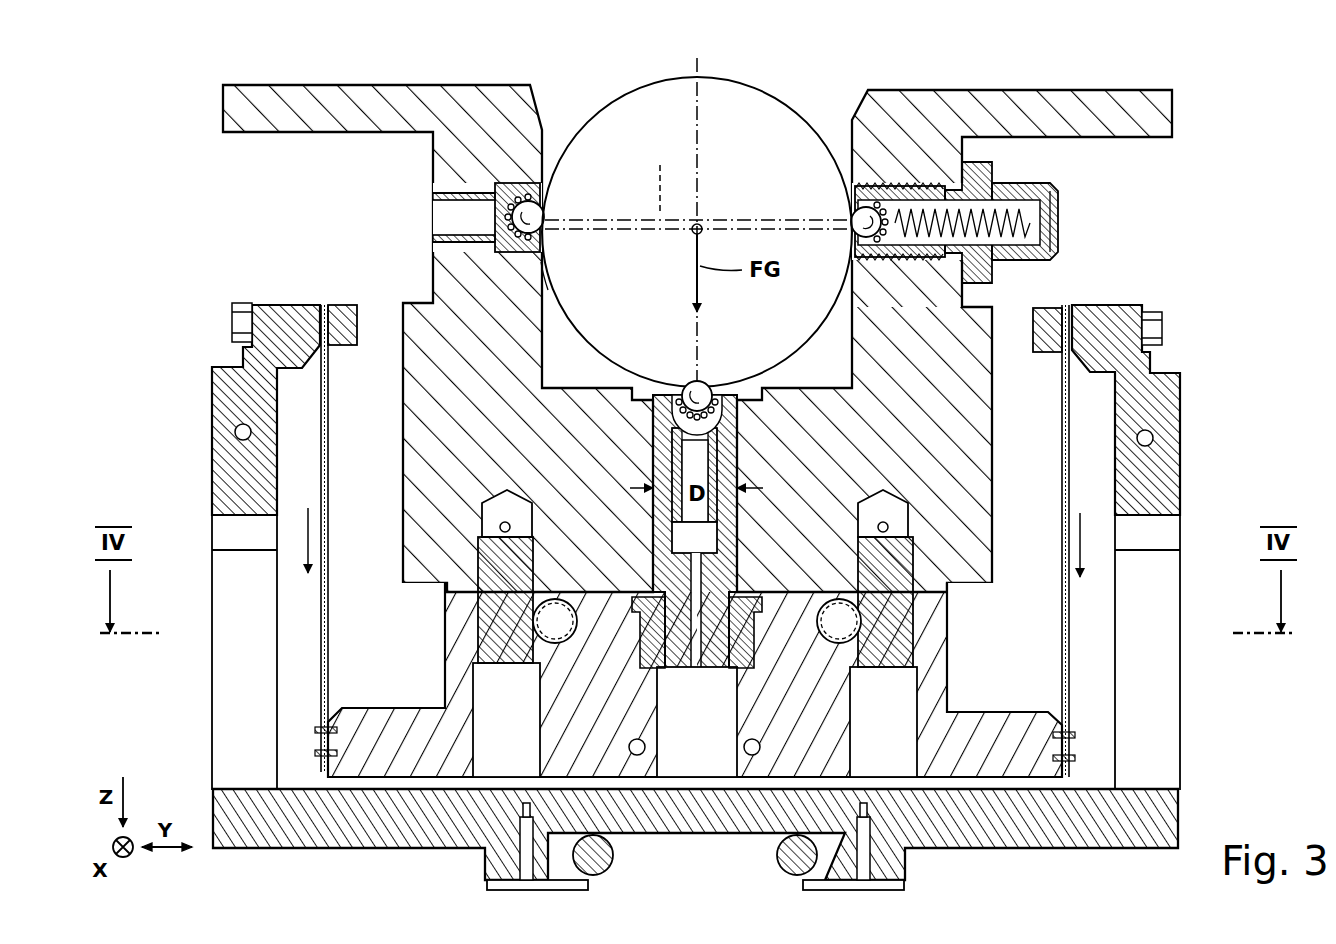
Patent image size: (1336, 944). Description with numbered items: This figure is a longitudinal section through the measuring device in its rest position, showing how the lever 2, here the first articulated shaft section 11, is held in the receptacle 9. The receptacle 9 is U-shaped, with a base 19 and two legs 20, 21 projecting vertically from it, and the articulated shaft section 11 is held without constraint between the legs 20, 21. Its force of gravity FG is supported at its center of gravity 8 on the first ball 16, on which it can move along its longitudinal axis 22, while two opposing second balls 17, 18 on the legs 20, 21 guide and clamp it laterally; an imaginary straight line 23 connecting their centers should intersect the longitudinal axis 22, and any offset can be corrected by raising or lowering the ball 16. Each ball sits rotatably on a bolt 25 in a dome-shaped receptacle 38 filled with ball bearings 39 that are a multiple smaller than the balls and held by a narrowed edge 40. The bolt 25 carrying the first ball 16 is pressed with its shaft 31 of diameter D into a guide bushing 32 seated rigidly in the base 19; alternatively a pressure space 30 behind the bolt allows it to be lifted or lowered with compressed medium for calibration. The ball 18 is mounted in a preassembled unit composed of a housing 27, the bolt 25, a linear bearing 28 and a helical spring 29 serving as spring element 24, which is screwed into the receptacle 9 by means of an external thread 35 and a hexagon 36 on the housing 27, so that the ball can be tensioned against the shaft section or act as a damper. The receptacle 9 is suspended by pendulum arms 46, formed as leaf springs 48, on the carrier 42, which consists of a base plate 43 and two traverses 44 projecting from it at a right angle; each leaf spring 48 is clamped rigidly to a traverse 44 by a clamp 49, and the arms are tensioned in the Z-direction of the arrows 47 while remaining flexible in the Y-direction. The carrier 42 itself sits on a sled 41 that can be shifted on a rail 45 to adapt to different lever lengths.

The lever 2 is at (697, 210).
The first articulated shaft section 11 is at (668, 78).
The center of gravity 8 is at (690, 232).
The longitudinal axis 22 is at (697, 223).
The receptacle 9 is at (990, 88).
The first ball 16 is at (705, 385).
The second ball 17 is at (564, 137).
The second ball 18 is at (857, 210).
The base 19 is at (800, 440).
The leg 20 is at (490, 140).
The leg 21 is at (922, 130).
The straight line 23 is at (656, 180).
The spring element 24 is at (1077, 221).
The helical spring 29 is at (1060, 215).
The bolt 25 is at (440, 213).
The housing 27 is at (1058, 237).
The linear bearing 28 is at (995, 165).
The pressure space 30 is at (693, 541).
The shaft 31 is at (660, 457).
The guide bushing 32 is at (727, 515).
The external thread 35 is at (856, 178).
The hexagon 36 is at (975, 290).
The dome-shaped receptacle 38 is at (517, 183).
The ball bearings 39 is at (548, 200).
The narrowed edge 40 is at (545, 282).
The sled 41 is at (647, 810).
The carrier 42 is at (695, 842).
The base plate 43 is at (995, 835).
The traverse 44 is at (225, 480).
The rail 45 is at (790, 868).
The pendulum arm 46 is at (695, 541).
The leaf spring 48 is at (330, 600).
The arrow 47 is at (300, 545).
The clamp 49 is at (345, 347).